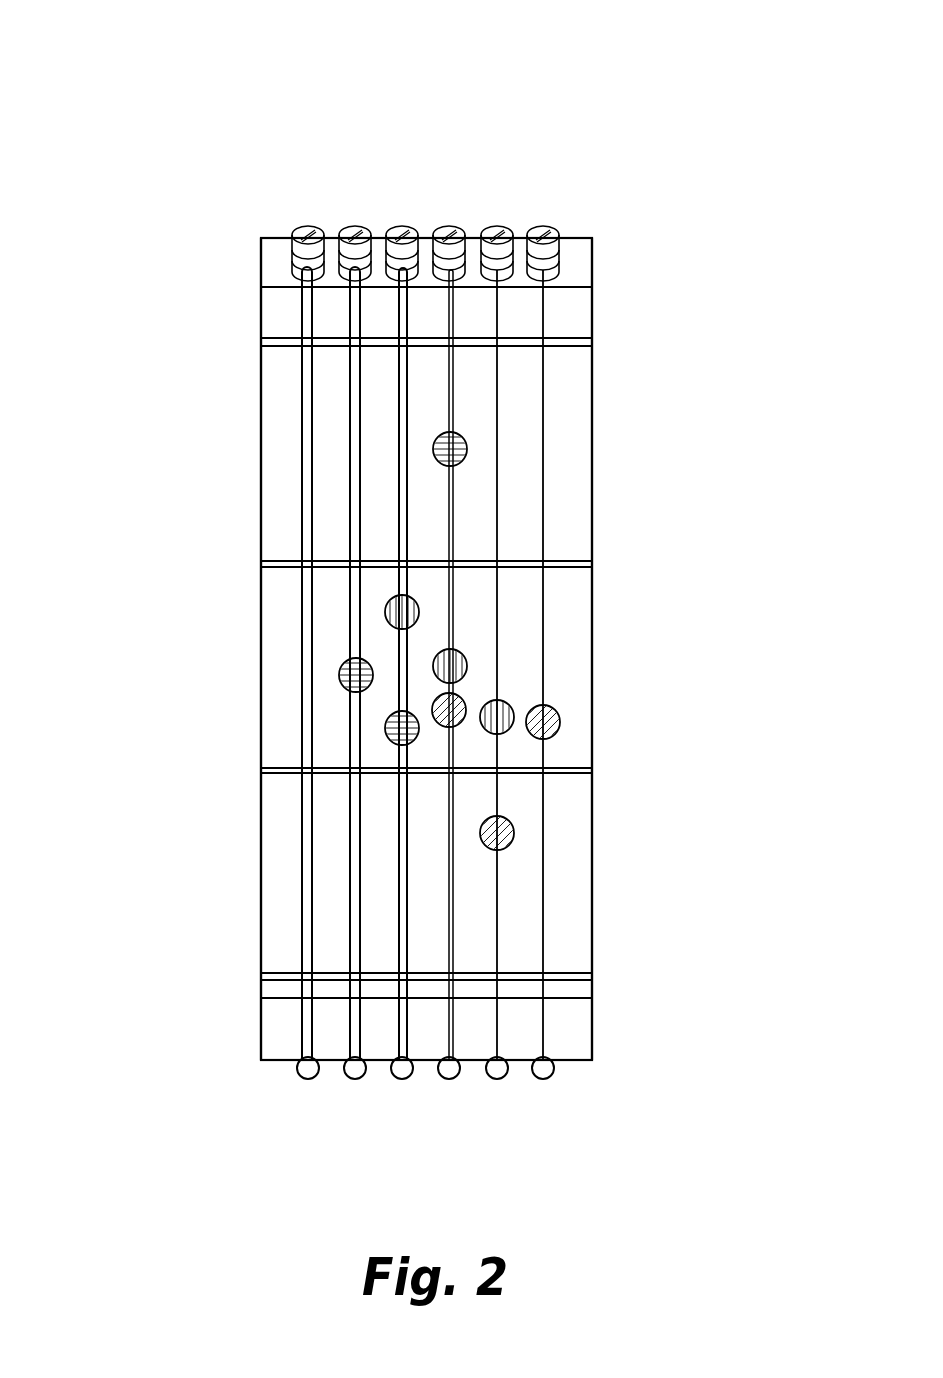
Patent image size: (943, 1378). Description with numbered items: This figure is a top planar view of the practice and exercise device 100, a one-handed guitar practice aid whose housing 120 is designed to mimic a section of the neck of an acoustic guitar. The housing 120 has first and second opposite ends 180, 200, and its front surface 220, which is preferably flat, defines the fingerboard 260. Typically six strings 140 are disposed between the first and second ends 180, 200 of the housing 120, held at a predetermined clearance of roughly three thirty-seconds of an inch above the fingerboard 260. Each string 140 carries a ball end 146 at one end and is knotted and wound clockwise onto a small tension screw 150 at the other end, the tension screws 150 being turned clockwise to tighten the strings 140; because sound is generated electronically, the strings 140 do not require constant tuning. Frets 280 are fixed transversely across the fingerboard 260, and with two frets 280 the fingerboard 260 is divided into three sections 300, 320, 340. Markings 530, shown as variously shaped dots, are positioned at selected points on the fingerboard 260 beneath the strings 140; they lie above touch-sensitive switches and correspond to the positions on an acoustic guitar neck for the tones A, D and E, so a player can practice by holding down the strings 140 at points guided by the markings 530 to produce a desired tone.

The practice and exercise device 100 is at (210, 213).
The housing 120 is at (265, 432).
The strings 140 is at (545, 816).
The ball end 146 is at (303, 1076).
The tension screw 150 is at (406, 217).
The first end 180 is at (602, 1040).
The second end 200 is at (607, 305).
The front surface 220 is at (528, 550).
The fingerboard 260 is at (330, 850).
The fret 280 is at (280, 566).
The first section 300 is at (567, 902).
The second section 320 is at (580, 650).
The third section 340 is at (575, 434).
The markings 530 is at (340, 679).